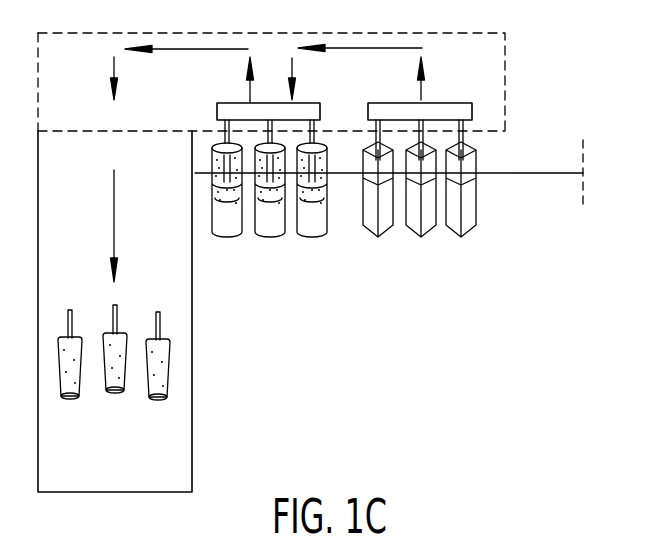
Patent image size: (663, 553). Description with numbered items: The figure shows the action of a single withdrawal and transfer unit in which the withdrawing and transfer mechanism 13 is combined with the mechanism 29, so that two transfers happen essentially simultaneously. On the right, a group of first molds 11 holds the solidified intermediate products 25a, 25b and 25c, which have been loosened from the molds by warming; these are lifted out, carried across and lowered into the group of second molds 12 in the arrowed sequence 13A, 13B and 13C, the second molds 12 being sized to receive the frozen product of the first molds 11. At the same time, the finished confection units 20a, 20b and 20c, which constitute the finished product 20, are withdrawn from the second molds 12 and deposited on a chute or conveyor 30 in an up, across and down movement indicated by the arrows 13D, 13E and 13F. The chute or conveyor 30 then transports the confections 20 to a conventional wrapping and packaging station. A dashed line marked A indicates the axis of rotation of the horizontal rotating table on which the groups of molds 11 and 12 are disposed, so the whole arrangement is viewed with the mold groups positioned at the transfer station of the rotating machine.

The mechanism 29 is at (271, 246).
The withdrawing and transfer mechanism 13 is at (271, 65).
The upward movement of intermediate products 13A is at (441, 80).
The across movement of intermediate products 13B is at (360, 66).
The downward movement of intermediate products 13C is at (310, 81).
The upward movement of finished confections 13D is at (233, 81).
The across movement of finished confections 13E is at (186, 68).
The downward movement of finished confections 13F is at (133, 82).
The second molds 12 is at (320, 242).
The first molds 11 is at (470, 242).
The finished product 20 is at (166, 410).
The finished confection unit 20a is at (322, 173).
The finished confection unit 20b is at (275, 173).
The finished confection unit 20c is at (215, 160).
The solidified product 25a is at (468, 160).
The solidified product 25b is at (427, 170).
The solidified product 25c is at (373, 162).
The chute or conveyor 30 is at (114, 333).
The axis of rotation A is at (575, 152).